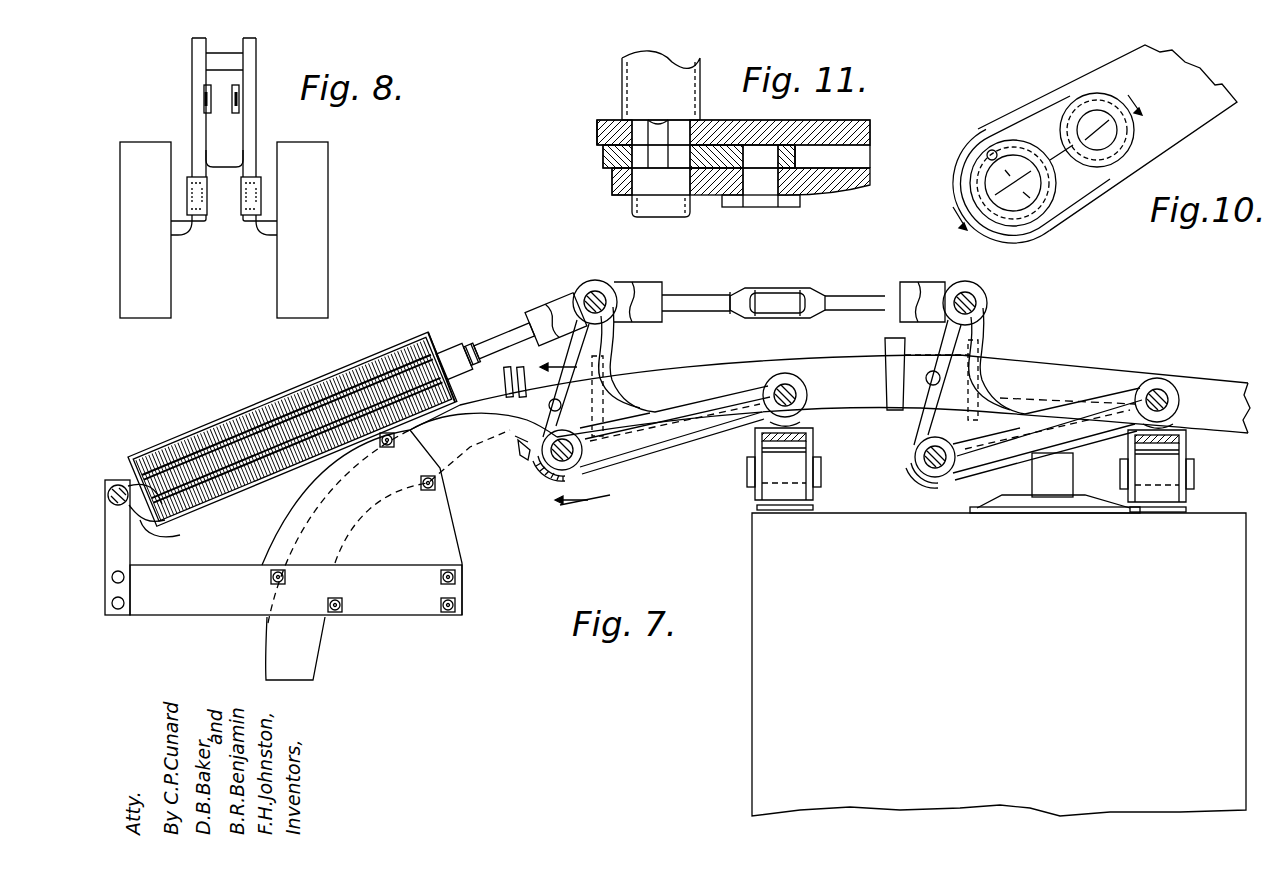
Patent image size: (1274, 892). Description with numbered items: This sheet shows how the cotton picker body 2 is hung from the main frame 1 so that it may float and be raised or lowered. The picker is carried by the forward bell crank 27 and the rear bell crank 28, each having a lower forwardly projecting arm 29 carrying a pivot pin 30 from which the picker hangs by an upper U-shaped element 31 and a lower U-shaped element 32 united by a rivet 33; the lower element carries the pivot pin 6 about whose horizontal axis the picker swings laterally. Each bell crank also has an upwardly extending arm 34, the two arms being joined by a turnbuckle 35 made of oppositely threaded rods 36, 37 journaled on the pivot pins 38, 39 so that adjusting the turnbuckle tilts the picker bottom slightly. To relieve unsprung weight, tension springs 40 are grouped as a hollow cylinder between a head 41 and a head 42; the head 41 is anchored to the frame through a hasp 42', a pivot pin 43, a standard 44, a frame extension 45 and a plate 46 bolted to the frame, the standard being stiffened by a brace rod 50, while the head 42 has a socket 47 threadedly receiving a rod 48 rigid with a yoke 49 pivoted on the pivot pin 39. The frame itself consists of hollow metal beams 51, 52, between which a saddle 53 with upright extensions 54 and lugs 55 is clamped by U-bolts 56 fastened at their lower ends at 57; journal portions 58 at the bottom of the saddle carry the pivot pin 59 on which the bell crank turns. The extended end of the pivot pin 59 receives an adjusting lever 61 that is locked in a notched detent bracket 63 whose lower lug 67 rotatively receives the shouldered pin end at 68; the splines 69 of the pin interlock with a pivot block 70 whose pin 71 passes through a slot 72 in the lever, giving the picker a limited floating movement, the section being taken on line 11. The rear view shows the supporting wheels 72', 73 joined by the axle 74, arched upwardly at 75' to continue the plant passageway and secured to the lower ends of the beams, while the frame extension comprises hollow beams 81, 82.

In FIG. 7, the main frame 1 is at (1115, 362).
In FIG. 8, the main frame 1 is at (190, 66).
In FIG. 7, the picker mechanism body 2 is at (752, 690).
In FIG. 7, the pivot pin 6 is at (1212, 492).
In FIG. 10, the section line 11 is at (1050, 162).
In FIG. 7, the forward bell crank 27 is at (985, 478).
In FIG. 7, the rear bell crank 28 is at (672, 455).
In FIG. 7, the lower forwardly projecting arm 29 is at (720, 400).
In FIG. 7, the pivot pin 30 is at (793, 380).
In FIG. 7, the upper U-shaped element 31 is at (880, 410).
In FIG. 7, the lower U-shaped element 32 is at (822, 467).
In FIG. 7, the rivet 33 is at (755, 440).
In FIG. 7, the upwardly extending arm 34 is at (622, 350).
In FIG. 7, the turnbuckle 35 is at (778, 288).
In FIG. 7, the screw-threaded rod 36 is at (850, 295).
In FIG. 7, the screw-threaded rod 37 is at (690, 295).
In FIG. 7, the pivot pin 38 is at (985, 298).
In FIG. 7, the pivot pin 39 is at (598, 290).
In FIG. 7, the tension springs 40 is at (305, 390).
In FIG. 7, the head 41 is at (128, 482).
In FIG. 7, the head 42 is at (409, 357).
In FIG. 7, the hasp 42' is at (176, 525).
In FIG. 7, the pivot pin 43 is at (116, 484).
In FIG. 7, the standard 44 is at (130, 548).
In FIG. 7, the frame extension 45 is at (232, 572).
In FIG. 7, the plate 46 is at (452, 518).
In FIG. 7, the socket 47 is at (445, 345).
In FIG. 7, the rod 48 is at (505, 333).
In FIG. 7, the yoke 49 is at (542, 305).
In FIG. 7, the brace rod 50 is at (420, 440).
In FIG. 8, the hollow metal beam 51 is at (190, 118).
In FIG. 7, the hollow metal beam 52 is at (1055, 362).
In FIG. 8, the hollow metal beam 52 is at (255, 124).
In FIG. 7, the saddle 53 is at (540, 475).
In FIG. 7, the upright extension 54 is at (522, 456).
In FIG. 7, the lug 55 is at (508, 368).
In FIG. 7, the U-bolt 56 is at (496, 353).
In FIG. 7, the U-bolt lower end fastening 57 is at (515, 445).
In FIG. 7, the journal portion 58 is at (575, 492).
In FIG. 7, the pivot pin 59 is at (582, 460).
In FIG. 11, the pivot pin 59 is at (622, 78).
In FIG. 10, the pivot pin 59 is at (1033, 195).
In FIG. 11, the adjusting lever 61 is at (875, 185).
In FIG. 10, the adjusting lever 61 is at (1175, 135).
In FIG. 11, the detent bracket 63 is at (840, 122).
In FIG. 11, the lower lug 67 is at (598, 130).
In FIG. 11, the shoulder 68 is at (612, 182).
In FIG. 11, the splines 69 is at (640, 155).
In FIG. 11, the pivot block 70 is at (800, 155).
In FIG. 10, the pivot block 70 is at (990, 130).
In FIG. 11, the pin 71 is at (765, 207).
In FIG. 10, the pin 71 is at (1103, 150).
In FIG. 11, the slot 72 is at (802, 185).
In FIG. 10, the slot 72 is at (1078, 107).
In FIG. 8, the rear supporting wheel 72' is at (332, 230).
In FIG. 8, the rear supporting wheel 73 is at (165, 265).
In FIG. 8, the axle 74 is at (265, 222).
In FIG. 8, the arched portion of axle 75' is at (284, 171).
In FIG. 8, the hollow beam 81 is at (203, 88).
In FIG. 8, the hollow beam 82 is at (240, 88).